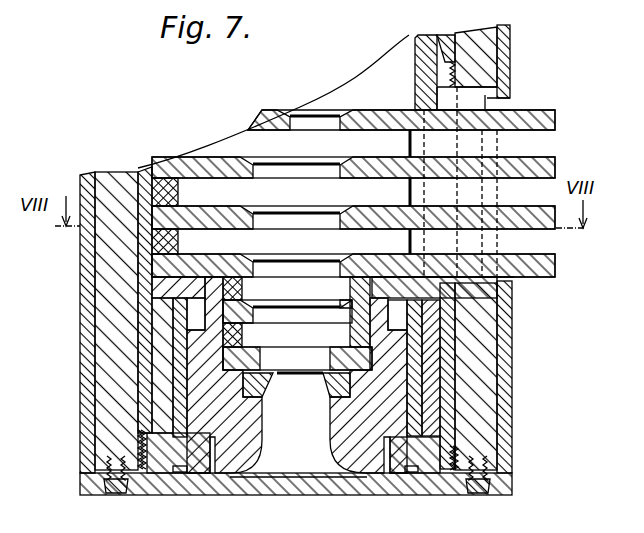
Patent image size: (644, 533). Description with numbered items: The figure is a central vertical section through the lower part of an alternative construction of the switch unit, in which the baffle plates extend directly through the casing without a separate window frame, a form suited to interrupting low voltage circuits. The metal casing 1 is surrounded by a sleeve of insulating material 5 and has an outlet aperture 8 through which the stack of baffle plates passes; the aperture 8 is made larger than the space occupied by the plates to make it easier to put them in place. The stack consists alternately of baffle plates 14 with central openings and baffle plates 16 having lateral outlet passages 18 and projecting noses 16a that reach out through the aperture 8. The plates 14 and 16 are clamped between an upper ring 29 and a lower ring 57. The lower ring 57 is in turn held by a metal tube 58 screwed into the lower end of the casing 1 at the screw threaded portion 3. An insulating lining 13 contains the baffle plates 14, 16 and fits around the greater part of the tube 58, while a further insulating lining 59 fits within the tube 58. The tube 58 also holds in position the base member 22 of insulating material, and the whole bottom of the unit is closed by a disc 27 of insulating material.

The casing 1 is at (492, 62).
The screw threaded portion 3 is at (143, 450).
The sleeve of insulating material 5 is at (86, 258).
The outlet aperture 8 is at (487, 108).
The insulating lining 13 is at (147, 314).
The baffle plates with central openings 14 is at (355, 167).
The baffle plates with cut-away portion 16 is at (152, 166).
The projecting noses 16a is at (534, 145).
The lateral outlet passages 18 is at (442, 252).
The base member 22 is at (385, 413).
The disc of insulating material 27 is at (148, 487).
The upper ring 29 is at (419, 57).
The lower ring 57 is at (147, 280).
The metal tube 58 is at (160, 353).
The insulating lining within tube 59 is at (412, 387).